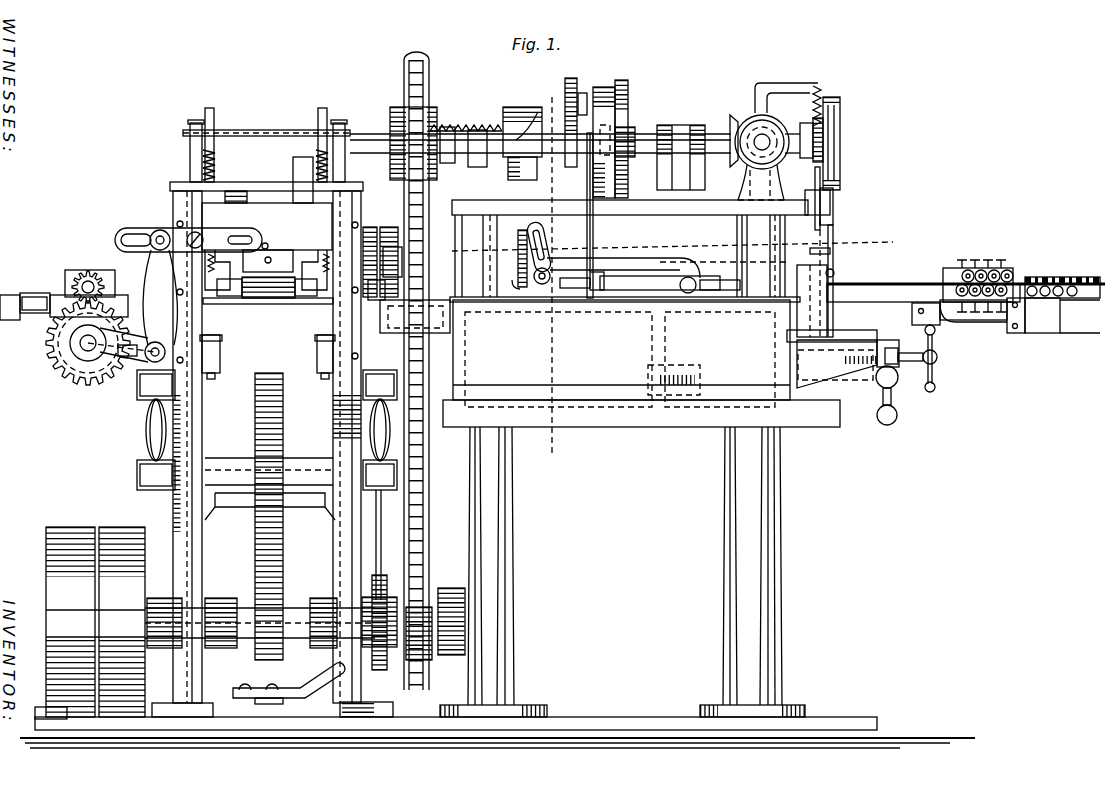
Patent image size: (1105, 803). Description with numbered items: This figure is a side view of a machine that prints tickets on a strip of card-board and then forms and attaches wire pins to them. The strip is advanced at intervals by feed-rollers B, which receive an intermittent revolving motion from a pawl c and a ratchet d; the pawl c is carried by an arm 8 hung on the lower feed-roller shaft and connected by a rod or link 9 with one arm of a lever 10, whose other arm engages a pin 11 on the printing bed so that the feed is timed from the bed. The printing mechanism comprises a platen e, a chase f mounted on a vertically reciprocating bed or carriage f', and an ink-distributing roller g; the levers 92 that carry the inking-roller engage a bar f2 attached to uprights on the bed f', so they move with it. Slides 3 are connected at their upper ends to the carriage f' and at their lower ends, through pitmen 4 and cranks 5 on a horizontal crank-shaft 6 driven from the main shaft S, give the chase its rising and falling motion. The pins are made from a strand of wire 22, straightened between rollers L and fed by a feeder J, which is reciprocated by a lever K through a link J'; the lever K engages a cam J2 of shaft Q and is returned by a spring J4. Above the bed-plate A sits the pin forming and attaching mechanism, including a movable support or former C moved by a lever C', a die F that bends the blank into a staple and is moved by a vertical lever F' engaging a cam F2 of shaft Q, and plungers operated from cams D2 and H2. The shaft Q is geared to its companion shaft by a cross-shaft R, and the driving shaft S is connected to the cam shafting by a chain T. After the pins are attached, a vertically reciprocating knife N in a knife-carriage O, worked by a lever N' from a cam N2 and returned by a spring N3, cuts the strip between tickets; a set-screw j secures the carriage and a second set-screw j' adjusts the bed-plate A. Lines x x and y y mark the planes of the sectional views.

The bed-plate A is at (640, 508).
The chain T is at (429, 491).
The spring J4 is at (466, 133).
The cam J2 is at (522, 131).
The cam D2 is at (578, 93).
The shaft Q is at (566, 140).
The cam F2 is at (604, 142).
The cam H2 is at (628, 88).
The cross-shaft R is at (764, 140).
The cam N2 is at (838, 143).
The spring N3 is at (822, 92).
The lever N' is at (841, 252).
The knife N is at (832, 298).
The knife-carriage O is at (836, 295).
The strand of wire 22 is at (966, 282).
The rollers L is at (1006, 293).
The set-screw j is at (911, 358).
The second set-screw j' is at (848, 382).
The lever C' is at (511, 255).
The lever K is at (543, 245).
The movable support C is at (525, 275).
The link J' is at (633, 262).
The vertical lever F' is at (608, 202).
The feeder J is at (725, 262).
The die F is at (580, 313).
The slides 3 is at (188, 287).
The levers 92 is at (222, 110).
The bar f2 is at (266, 123).
The carriage f' is at (223, 227).
The lever 10 is at (180, 240).
The pin 11 is at (248, 238).
The chase f is at (268, 261).
The platen e is at (268, 297).
The ink-distributing roller g is at (280, 284).
The pitmen 4 is at (146, 432).
The cranks 5 is at (360, 514).
The horizontal shaft 6 is at (300, 462).
The main shaft S is at (310, 605).
The feed-rollers B is at (88, 282).
The rod or link 9 is at (150, 280).
The ratchet d is at (62, 337).
The pawl c is at (126, 360).
The arm 8 is at (113, 358).
The section line x is at (671, 243).
The section line y is at (550, 269).